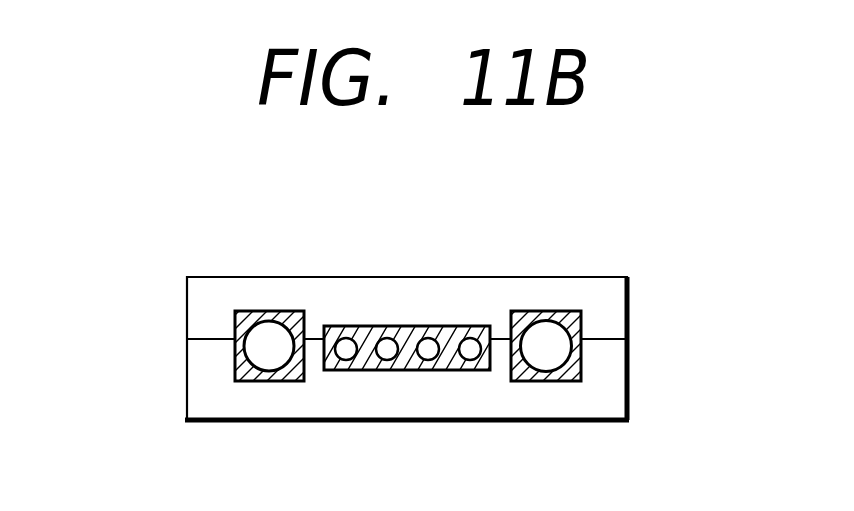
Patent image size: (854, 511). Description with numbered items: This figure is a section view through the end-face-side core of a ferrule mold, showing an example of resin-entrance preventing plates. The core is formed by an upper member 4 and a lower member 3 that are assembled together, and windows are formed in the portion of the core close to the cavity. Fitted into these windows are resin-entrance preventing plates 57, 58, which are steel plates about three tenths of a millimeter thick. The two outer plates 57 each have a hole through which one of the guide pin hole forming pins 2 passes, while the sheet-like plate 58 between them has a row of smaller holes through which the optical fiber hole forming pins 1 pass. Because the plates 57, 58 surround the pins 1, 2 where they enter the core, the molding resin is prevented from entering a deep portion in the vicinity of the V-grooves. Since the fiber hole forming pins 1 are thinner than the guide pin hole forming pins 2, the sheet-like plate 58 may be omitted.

The optical fiber hole forming pin 1 is at (468, 350).
The guide pin hole forming pin 2 is at (551, 352).
The lower member 3 is at (185, 408).
The upper member 4 is at (185, 318).
The resin-entrance preventing plate 57 is at (267, 313).
The resin-entrance preventing plate 58 is at (375, 327).